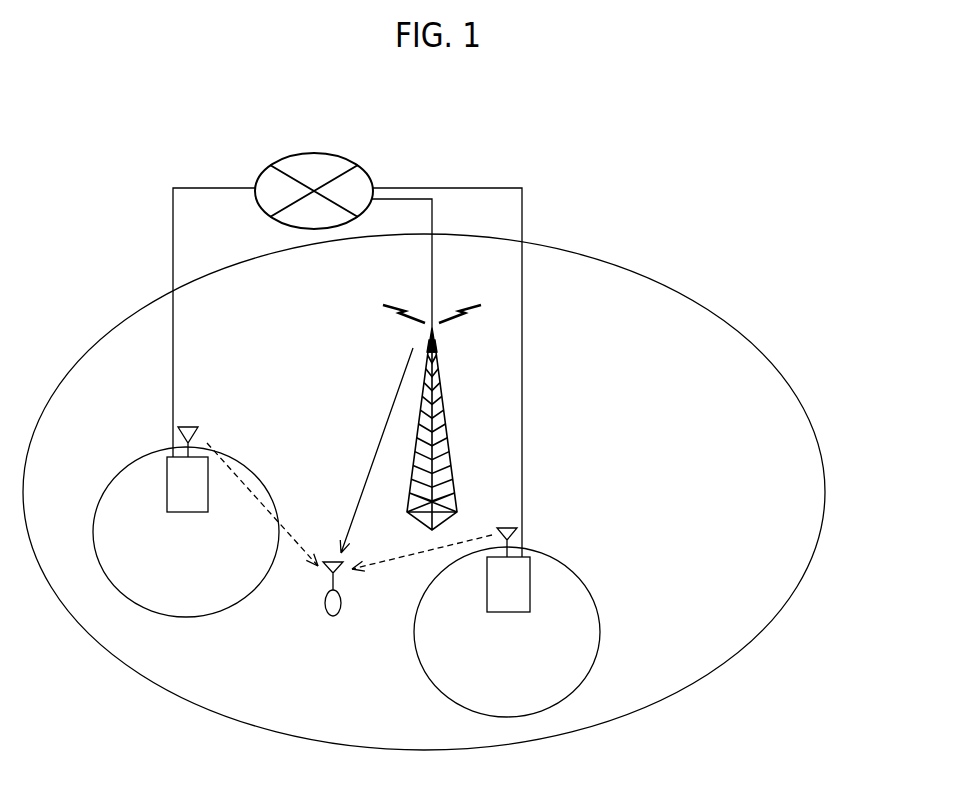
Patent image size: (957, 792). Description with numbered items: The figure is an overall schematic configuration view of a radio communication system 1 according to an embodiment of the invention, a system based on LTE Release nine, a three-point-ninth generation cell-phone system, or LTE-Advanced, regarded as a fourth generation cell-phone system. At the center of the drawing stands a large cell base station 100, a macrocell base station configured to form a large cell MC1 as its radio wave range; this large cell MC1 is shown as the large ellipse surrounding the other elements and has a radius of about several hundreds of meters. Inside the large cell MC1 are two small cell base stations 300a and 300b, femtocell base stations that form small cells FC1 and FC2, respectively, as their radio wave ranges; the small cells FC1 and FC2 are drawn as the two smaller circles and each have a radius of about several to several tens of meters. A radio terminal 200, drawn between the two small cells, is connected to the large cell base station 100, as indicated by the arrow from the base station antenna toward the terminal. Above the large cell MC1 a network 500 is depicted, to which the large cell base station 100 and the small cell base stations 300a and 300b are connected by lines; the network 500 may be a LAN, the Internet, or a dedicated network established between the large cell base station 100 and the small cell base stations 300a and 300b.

The radio communication system 1 is at (630, 178).
The large cell base station 100 is at (441, 388).
The radio terminal 200 is at (333, 617).
The small cell base station 300a is at (177, 485).
The small cell base station 300b is at (518, 572).
The network 500 is at (356, 164).
The large cell MC1 is at (662, 284).
The small cell FC1 is at (100, 500).
The small cell FC2 is at (600, 625).